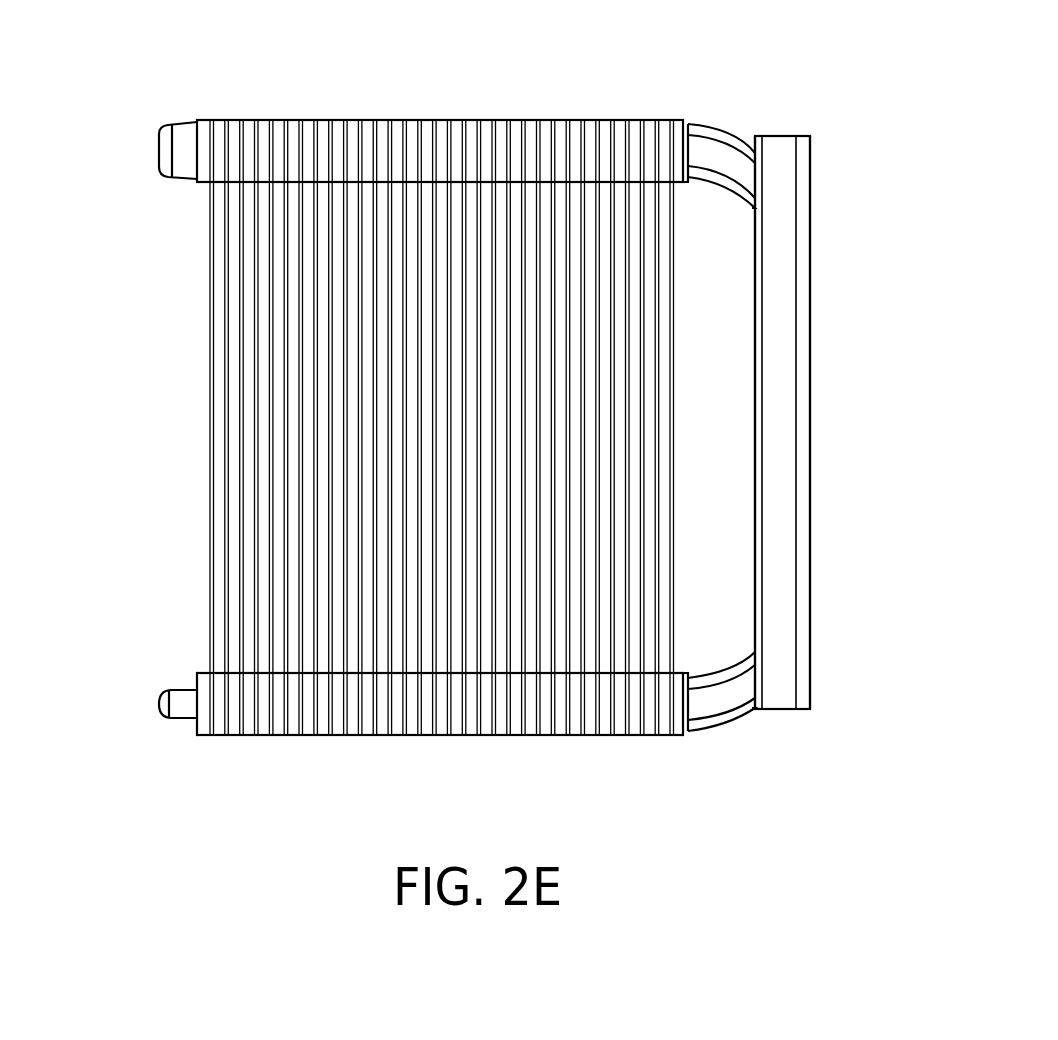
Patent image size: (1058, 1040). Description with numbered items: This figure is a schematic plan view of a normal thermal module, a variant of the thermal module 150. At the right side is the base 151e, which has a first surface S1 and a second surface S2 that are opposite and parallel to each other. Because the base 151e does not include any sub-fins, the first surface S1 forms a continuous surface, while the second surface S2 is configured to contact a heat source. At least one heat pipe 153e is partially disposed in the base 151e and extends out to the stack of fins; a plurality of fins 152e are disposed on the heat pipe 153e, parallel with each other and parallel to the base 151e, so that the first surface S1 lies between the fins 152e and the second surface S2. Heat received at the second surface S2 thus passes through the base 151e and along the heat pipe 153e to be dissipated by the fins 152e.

The thermal module 150 is at (501, 403).
The base 151e is at (780, 200).
The fins 152e is at (210, 293).
The heat pipe 153e is at (183, 138).
The first surface S1 is at (752, 162).
The second surface S2 is at (812, 258).